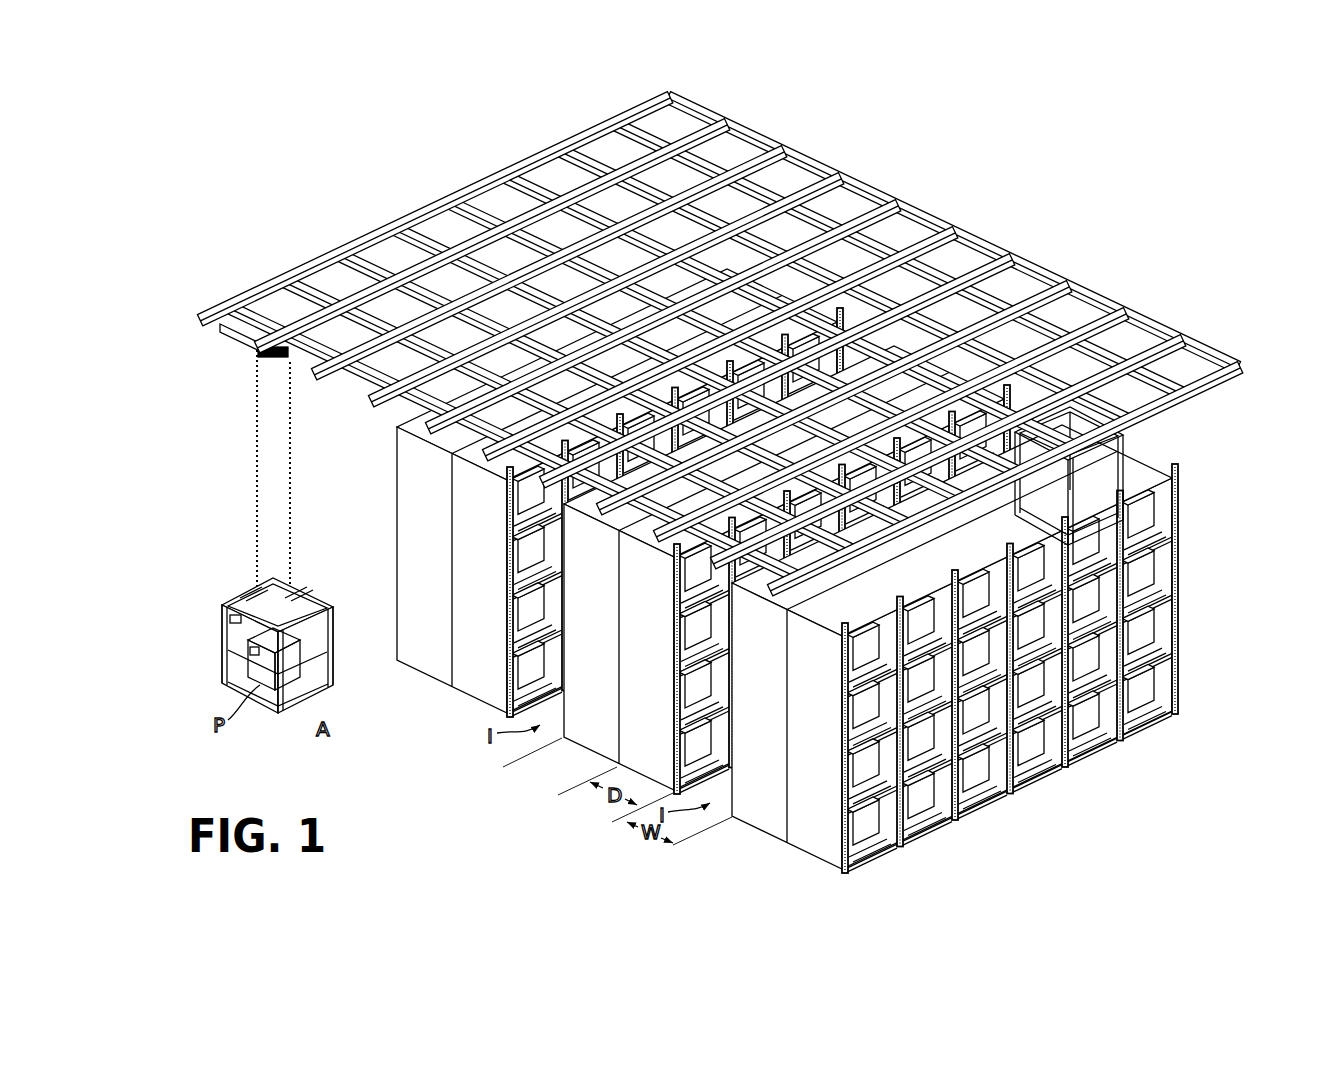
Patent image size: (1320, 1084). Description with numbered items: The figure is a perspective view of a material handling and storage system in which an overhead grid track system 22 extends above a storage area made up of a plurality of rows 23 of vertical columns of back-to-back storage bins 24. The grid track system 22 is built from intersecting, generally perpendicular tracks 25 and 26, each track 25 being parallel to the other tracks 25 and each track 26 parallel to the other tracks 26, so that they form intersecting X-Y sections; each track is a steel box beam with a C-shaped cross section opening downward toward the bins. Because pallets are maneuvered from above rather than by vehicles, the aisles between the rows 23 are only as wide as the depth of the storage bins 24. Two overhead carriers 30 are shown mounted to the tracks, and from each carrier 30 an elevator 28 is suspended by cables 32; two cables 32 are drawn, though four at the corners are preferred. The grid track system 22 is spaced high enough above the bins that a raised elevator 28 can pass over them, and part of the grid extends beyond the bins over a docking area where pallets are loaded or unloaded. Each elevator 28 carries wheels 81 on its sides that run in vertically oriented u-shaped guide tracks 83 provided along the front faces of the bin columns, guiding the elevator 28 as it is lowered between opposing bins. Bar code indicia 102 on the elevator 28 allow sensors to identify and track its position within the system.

The overhead grid track system 22 is at (732, 344).
The rows of vertical columns of storage bins 23 is at (785, 581).
The storage bin 24 is at (1167, 678).
The track 25 is at (1100, 300).
The track 26 is at (1213, 385).
The elevator 28 is at (681, 571).
The overhead carrier 30 is at (243, 349).
The cable 32 is at (256, 468).
The wheel 81 is at (221, 605).
The vertically oriented u-shaped guide track 83 is at (1180, 568).
The bar code indicia 102 is at (223, 632).